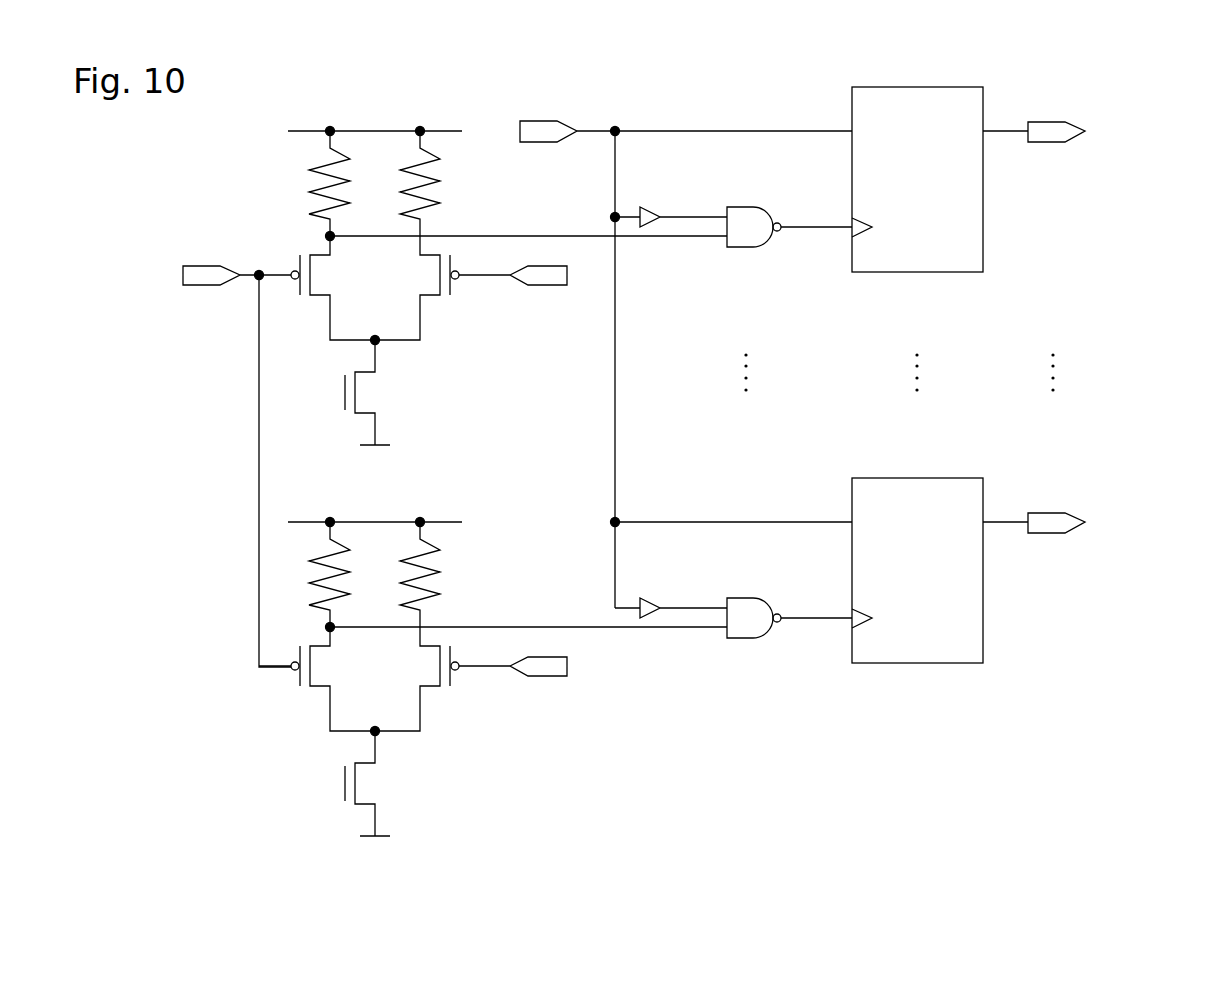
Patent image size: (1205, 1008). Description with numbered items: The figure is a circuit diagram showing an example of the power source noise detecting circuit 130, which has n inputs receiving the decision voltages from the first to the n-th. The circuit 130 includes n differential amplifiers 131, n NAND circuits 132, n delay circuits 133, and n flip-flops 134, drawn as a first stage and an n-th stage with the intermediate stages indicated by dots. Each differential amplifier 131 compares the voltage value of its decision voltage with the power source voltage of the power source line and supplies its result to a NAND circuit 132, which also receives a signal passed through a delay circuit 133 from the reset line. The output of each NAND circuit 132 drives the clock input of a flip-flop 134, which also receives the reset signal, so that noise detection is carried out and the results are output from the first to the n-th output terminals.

The power source noise detecting circuit 130 is at (1045, 864).
The differential amplifier 131 is at (434, 368).
The NAND circuit 132 is at (745, 249).
The delay circuit 133 is at (652, 206).
The flip-flop 134 is at (965, 272).